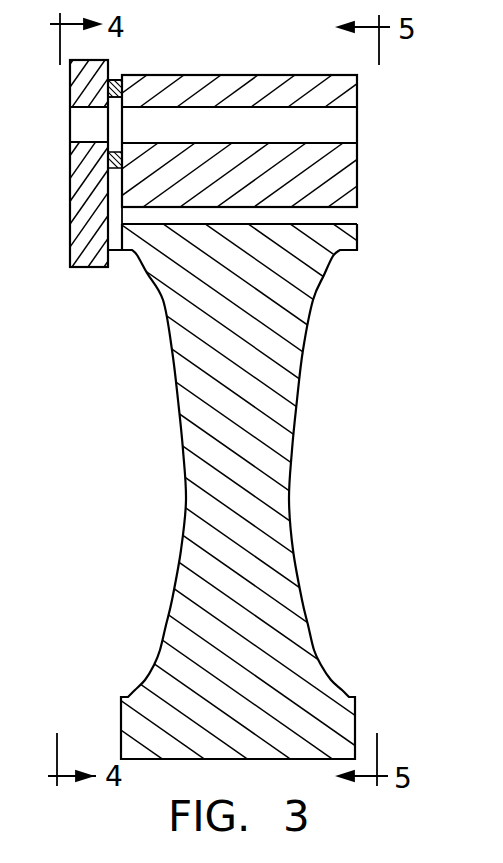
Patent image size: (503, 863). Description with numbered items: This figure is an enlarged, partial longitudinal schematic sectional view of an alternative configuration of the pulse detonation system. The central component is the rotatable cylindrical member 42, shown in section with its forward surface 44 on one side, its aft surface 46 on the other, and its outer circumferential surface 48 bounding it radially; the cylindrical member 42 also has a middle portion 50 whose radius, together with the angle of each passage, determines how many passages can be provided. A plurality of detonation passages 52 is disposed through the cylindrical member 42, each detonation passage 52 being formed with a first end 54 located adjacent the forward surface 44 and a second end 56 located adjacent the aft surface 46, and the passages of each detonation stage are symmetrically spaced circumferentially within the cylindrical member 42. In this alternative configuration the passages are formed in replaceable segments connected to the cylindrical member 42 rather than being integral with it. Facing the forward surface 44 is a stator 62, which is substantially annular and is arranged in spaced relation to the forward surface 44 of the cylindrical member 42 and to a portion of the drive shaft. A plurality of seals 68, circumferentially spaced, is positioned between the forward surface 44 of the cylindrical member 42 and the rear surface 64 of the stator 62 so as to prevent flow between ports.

The rotatable cylindrical member 42 is at (302, 554).
The forward surface 44 is at (122, 176).
The aft surface 46 is at (357, 178).
The outer circumferential surface 48 is at (276, 75).
The middle portion 50 is at (334, 236).
The detonation passage 52 is at (203, 107).
The first end 54 is at (123, 107).
The second end 56 is at (358, 107).
The stator 62 is at (70, 245).
The rear surface 64 is at (110, 252).
The seals 68 is at (112, 82).